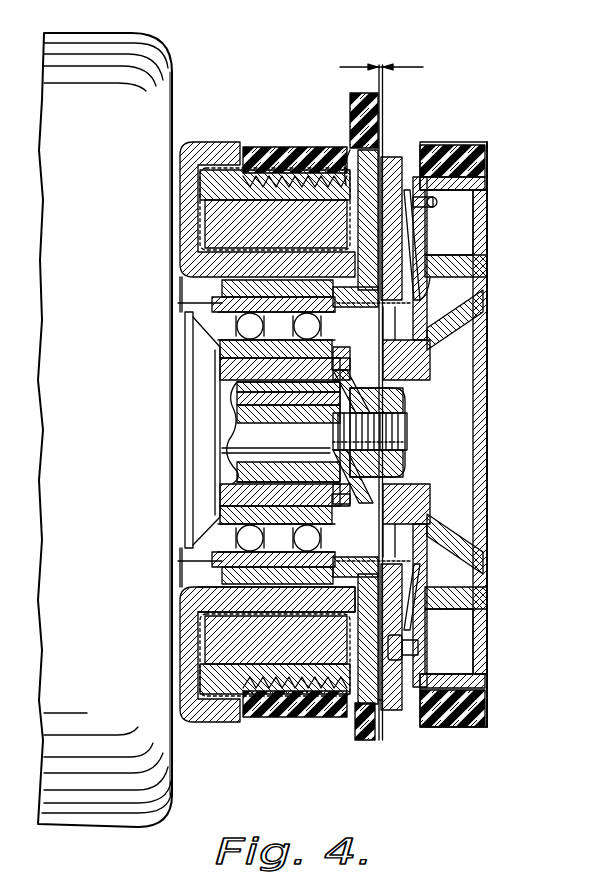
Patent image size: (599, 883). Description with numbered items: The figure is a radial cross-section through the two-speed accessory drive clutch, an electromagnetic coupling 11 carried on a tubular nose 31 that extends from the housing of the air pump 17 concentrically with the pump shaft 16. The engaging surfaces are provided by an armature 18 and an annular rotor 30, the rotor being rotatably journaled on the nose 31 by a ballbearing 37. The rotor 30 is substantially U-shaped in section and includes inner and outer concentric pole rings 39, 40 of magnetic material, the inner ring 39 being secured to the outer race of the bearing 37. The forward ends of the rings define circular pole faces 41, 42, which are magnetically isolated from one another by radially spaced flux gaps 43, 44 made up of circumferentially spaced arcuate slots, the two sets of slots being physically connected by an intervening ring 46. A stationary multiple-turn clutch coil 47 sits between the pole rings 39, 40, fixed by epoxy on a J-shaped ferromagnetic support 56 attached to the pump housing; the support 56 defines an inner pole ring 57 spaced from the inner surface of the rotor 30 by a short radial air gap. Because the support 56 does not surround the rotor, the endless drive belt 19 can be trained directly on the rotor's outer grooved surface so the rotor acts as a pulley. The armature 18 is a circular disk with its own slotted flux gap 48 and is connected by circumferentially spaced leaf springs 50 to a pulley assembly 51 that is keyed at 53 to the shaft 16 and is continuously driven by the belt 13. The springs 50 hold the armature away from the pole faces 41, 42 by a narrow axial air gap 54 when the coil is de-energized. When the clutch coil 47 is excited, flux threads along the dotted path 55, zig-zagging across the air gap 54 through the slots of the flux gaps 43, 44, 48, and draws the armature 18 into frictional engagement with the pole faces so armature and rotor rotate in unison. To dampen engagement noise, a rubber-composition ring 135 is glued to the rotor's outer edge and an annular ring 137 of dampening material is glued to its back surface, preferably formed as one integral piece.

The TSAD clutch 11 is at (452, 99).
The belt 13 is at (458, 148).
The pump shaft 16 is at (402, 428).
The air pump 17 is at (150, 52).
The armature 18 is at (398, 710).
The endless drive belt 19 is at (273, 143).
The rotor 30 is at (380, 722).
The tubular nose 31 is at (225, 362).
The ballbearing 37 is at (243, 322).
The inner pole ring 39 is at (228, 283).
The outer pole ring 40 is at (205, 186).
The pole face 41 is at (388, 305).
The pole face 42 is at (384, 156).
The flux gap 43 is at (345, 240).
The flux gap 44 is at (352, 150).
The intervening ring 46 is at (436, 201).
The clutch coil 47 is at (212, 238).
The flux gap 48 is at (415, 212).
The leaf springs 50 is at (430, 275).
The pulley assembly 51 is at (484, 636).
The key 53 is at (236, 403).
The axial air gap 54 is at (383, 62).
The flux path 55 is at (190, 218).
The J-shaped support 56 is at (185, 640).
The inner pole ring 57 is at (200, 600).
The ring 135 is at (352, 757).
The annular ring 137 is at (356, 738).